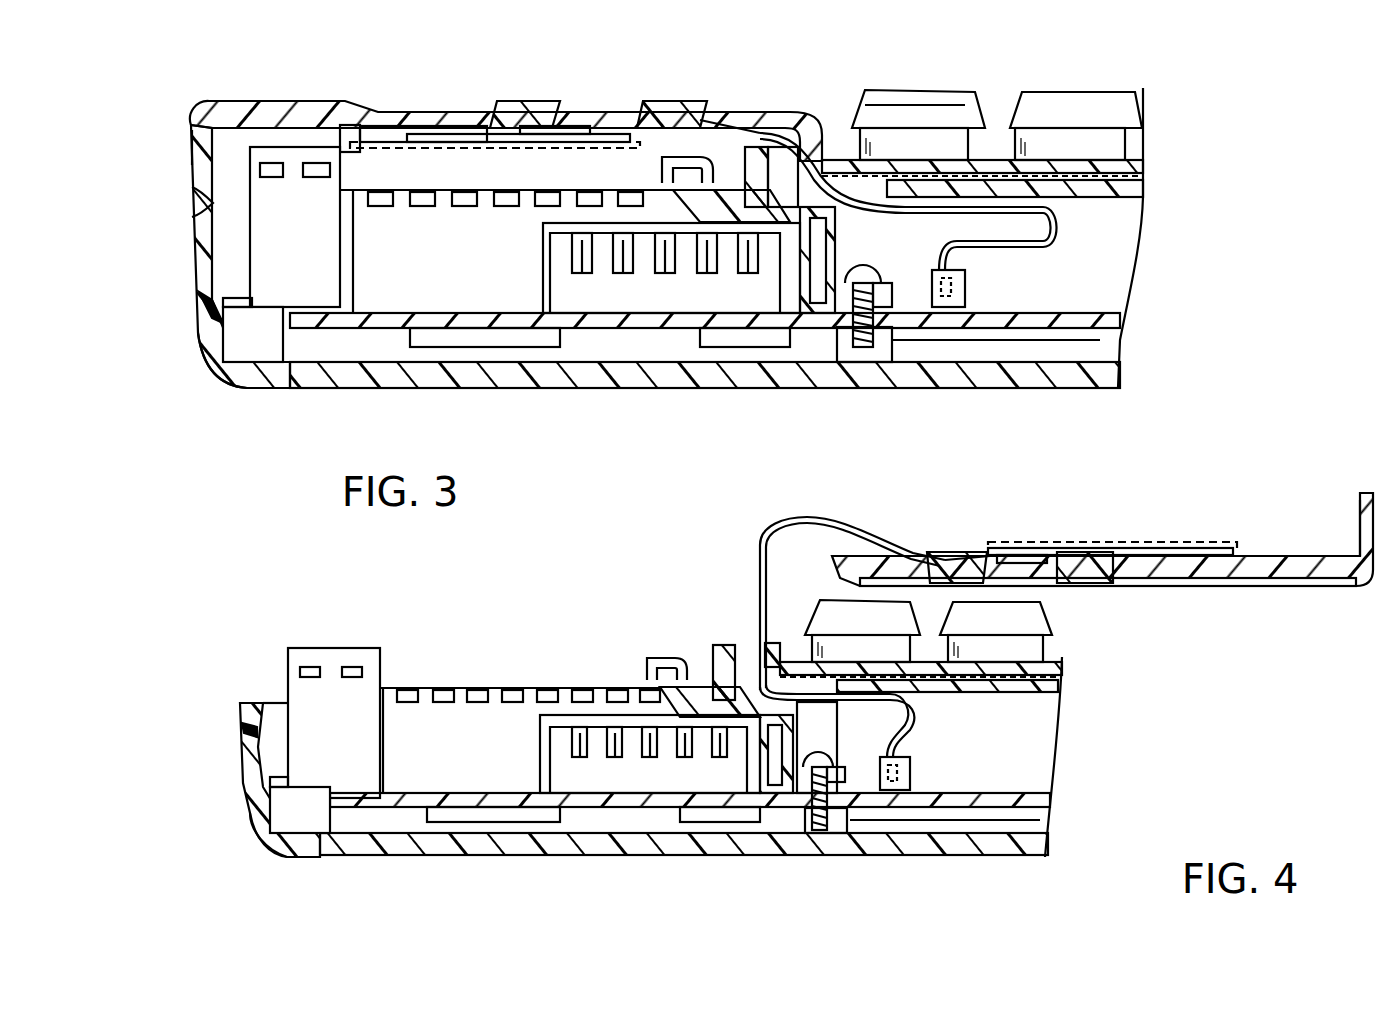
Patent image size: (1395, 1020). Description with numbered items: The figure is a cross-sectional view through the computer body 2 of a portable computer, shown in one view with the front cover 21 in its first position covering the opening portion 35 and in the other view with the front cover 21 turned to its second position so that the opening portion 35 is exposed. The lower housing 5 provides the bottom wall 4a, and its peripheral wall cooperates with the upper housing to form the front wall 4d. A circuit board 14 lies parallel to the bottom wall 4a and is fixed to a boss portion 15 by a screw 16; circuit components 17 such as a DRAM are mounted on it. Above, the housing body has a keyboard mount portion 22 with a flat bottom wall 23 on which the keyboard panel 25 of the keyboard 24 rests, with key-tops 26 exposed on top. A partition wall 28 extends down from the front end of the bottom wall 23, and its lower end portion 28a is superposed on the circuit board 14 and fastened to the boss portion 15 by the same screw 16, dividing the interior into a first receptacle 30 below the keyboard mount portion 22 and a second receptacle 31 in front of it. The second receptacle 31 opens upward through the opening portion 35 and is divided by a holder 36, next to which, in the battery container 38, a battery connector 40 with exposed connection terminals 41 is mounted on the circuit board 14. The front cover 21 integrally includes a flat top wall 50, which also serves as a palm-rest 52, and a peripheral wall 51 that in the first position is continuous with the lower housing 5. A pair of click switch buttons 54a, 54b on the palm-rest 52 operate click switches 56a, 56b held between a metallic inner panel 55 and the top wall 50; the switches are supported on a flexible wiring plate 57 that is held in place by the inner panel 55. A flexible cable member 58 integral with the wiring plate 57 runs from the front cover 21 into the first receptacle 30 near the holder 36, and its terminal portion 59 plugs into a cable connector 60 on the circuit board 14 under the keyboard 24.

In FIG. 3, the computer body 2 is at (207, 348).
In FIG. 4, the computer body 2 is at (265, 840).
In FIG. 3, the bottom wall 4a is at (668, 368).
In FIG. 4, the bottom wall 4a is at (580, 838).
In FIG. 3, the front wall 4d is at (198, 283).
In FIG. 4, the front wall 4d is at (245, 728).
In FIG. 3, the lower housing 5 is at (1082, 370).
In FIG. 4, the lower housing 5 is at (985, 848).
In FIG. 3, the circuit board 14 is at (1037, 317).
In FIG. 4, the circuit board 14 is at (1050, 795).
In FIG. 3, the boss portion 15 is at (880, 330).
In FIG. 4, the boss portion 15 is at (822, 810).
In FIG. 3, the screw 16 is at (855, 338).
In FIG. 4, the screw 16 is at (810, 828).
In FIG. 3, the circuit components 17 is at (490, 335).
In FIG. 4, the circuit components 17 is at (460, 815).
In FIG. 3, the front cover 21 is at (235, 110).
In FIG. 4, the front cover 21 is at (1368, 560).
In FIG. 3, the keyboard mount portion 22 is at (1135, 143).
In FIG. 3, the bottom wall 23 is at (1140, 190).
In FIG. 4, the bottom wall 23 is at (1058, 690).
In FIG. 3, the keyboard 24 is at (1075, 118).
In FIG. 4, the keyboard 24 is at (1040, 622).
In FIG. 3, the keyboard panel 25 is at (1140, 165).
In FIG. 4, the keyboard panel 25 is at (1060, 672).
In FIG. 3, the key-tops 26 is at (1025, 98).
In FIG. 3, the partition wall 28 is at (817, 262).
In FIG. 4, the partition wall 28 is at (790, 733).
In FIG. 3, the lower end portion 28a is at (888, 298).
In FIG. 4, the lower end portion 28a is at (850, 790).
In FIG. 3, the first receptacle 30 is at (1105, 285).
In FIG. 4, the first receptacle 30 is at (1035, 752).
In FIG. 3, the second receptacle 31 is at (385, 293).
In FIG. 4, the second receptacle 31 is at (405, 800).
In FIG. 3, the opening portion 35 is at (210, 203).
In FIG. 4, the opening portion 35 is at (267, 703).
In FIG. 3, the holder 36 is at (533, 297).
In FIG. 4, the holder 36 is at (520, 770).
In FIG. 3, the battery container 38 is at (222, 258).
In FIG. 4, the battery container 38 is at (272, 765).
In FIG. 3, the battery connector 40 is at (671, 258).
In FIG. 4, the battery connector 40 is at (650, 771).
In FIG. 3, the connection terminals 41 is at (655, 252).
In FIG. 4, the connection terminals 41 is at (580, 735).
In FIG. 3, the top wall 50 is at (420, 113).
In FIG. 4, the top wall 50 is at (1218, 570).
In FIG. 3, the peripheral wall 51 is at (192, 147).
In FIG. 3, the palm-rest 52 is at (320, 103).
In FIG. 4, the palm-rest 52 is at (1300, 575).
In FIG. 3, the click switch button 54a is at (675, 110).
In FIG. 4, the click switch button 54a is at (935, 570).
In FIG. 3, the click switch button 54b is at (525, 110).
In FIG. 4, the click switch button 54b is at (1100, 570).
In FIG. 3, the inner panel 55 is at (380, 142).
In FIG. 4, the inner panel 55 is at (1200, 553).
In FIG. 3, the click switch 56a is at (708, 120).
In FIG. 4, the click switch 56a is at (975, 558).
In FIG. 3, the click switch 56b is at (475, 148).
In FIG. 4, the click switch 56b is at (1090, 545).
In FIG. 3, the wiring plate 57 is at (598, 130).
In FIG. 4, the wiring plate 57 is at (1030, 553).
In FIG. 3, the cable member 58 is at (1065, 230).
In FIG. 4, the cable member 58 is at (915, 717).
In FIG. 3, the terminal portion 59 is at (950, 285).
In FIG. 4, the terminal portion 59 is at (900, 765).
In FIG. 3, the cable connector 60 is at (955, 300).
In FIG. 4, the cable connector 60 is at (920, 778).